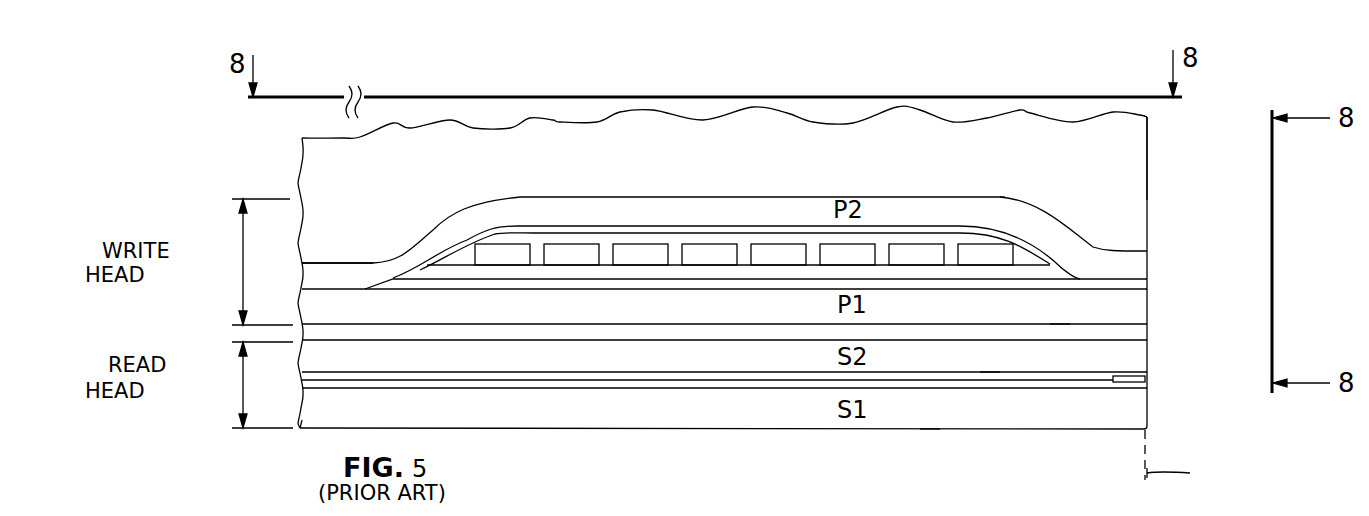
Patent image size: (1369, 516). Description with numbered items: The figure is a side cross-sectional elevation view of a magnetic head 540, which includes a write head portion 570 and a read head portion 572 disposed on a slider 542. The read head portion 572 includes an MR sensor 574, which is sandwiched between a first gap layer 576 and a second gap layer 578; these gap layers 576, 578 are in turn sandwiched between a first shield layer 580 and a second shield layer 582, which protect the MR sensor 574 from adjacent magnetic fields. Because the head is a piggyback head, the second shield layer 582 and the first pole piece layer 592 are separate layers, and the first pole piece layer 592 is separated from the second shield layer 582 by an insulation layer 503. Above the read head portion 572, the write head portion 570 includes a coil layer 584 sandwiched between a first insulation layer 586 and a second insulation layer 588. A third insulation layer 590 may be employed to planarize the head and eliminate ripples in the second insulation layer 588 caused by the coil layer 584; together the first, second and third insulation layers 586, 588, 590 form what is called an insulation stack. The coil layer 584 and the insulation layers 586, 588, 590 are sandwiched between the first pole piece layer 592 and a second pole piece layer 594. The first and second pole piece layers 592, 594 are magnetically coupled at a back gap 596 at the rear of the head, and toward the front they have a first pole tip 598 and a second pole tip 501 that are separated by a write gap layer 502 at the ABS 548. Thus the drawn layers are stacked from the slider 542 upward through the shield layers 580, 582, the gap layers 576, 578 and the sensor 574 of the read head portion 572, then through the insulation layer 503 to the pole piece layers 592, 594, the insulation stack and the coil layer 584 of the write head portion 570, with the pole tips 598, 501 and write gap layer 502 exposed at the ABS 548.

The magnetic head 540 is at (282, 152).
The slider 542 is at (1130, 147).
The back gap 596 is at (337, 262).
The third insulation layer 590 is at (545, 228).
The coil layer 584 is at (775, 250).
The second pole piece layer 594 is at (918, 208).
The second insulation layer 588 is at (1027, 253).
The second pole tip 501 is at (1138, 262).
The write gap layer 502 is at (1145, 280).
The first pole tip 598 is at (1147, 307).
The MR sensor 574 is at (1145, 378).
The ABS 548 is at (1212, 459).
The write head portion 570 is at (242, 267).
The read head portion 572 is at (242, 392).
The insulation layer 503 is at (615, 342).
The first insulation layer 586 is at (677, 275).
The second gap layer 578 is at (758, 372).
The first gap layer 576 is at (793, 388).
The first shield layer 580 is at (927, 413).
The second shield layer 582 is at (993, 357).
The first pole piece layer 592 is at (1058, 312).